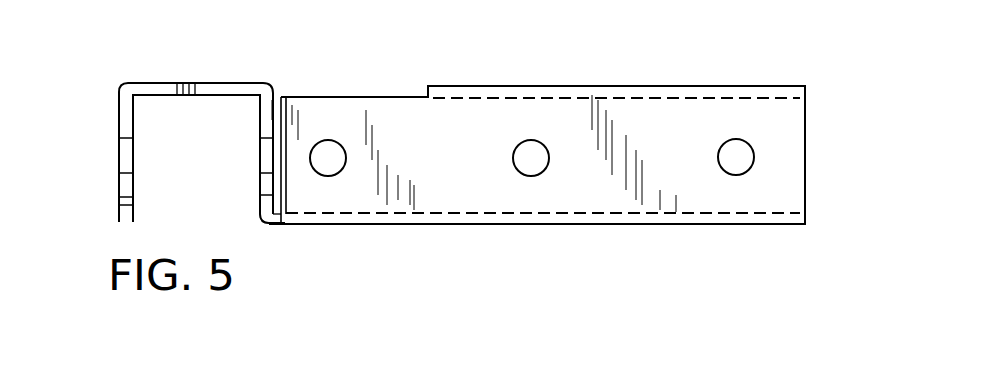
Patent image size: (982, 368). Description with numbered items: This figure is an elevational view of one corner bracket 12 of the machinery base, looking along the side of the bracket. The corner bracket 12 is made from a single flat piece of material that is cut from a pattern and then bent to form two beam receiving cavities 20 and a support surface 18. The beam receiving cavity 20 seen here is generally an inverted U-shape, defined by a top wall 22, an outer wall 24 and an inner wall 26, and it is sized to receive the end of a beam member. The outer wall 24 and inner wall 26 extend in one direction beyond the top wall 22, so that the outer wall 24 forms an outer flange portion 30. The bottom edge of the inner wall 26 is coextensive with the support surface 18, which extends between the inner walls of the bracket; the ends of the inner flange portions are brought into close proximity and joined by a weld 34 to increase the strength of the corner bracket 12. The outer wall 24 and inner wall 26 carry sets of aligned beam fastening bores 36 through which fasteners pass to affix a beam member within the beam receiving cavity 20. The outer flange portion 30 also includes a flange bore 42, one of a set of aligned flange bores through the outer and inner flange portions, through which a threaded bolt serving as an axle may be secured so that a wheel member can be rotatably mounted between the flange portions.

The corner bracket 12 is at (835, 56).
The support surface 18 is at (733, 210).
The beam receiving cavity 20 is at (213, 168).
The top wall 22 is at (200, 87).
The outer wall 24 is at (122, 130).
The inner wall 26 is at (265, 115).
The outer flange portion 30 is at (378, 192).
The weld 34 is at (280, 203).
The beam fastening bore 36 is at (742, 150).
The flange bore 42 is at (326, 150).